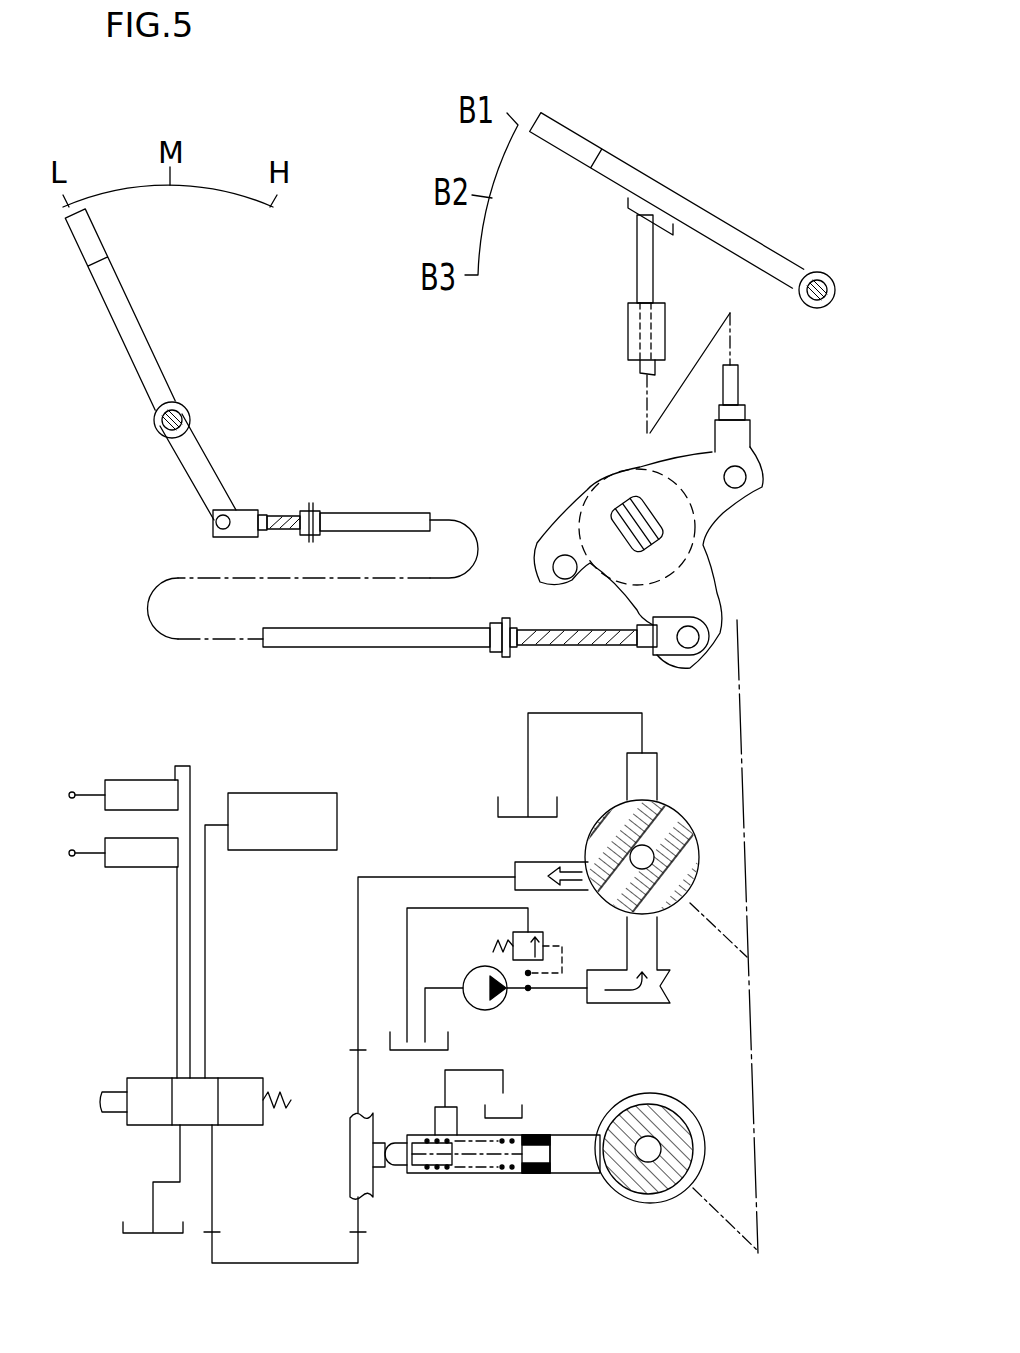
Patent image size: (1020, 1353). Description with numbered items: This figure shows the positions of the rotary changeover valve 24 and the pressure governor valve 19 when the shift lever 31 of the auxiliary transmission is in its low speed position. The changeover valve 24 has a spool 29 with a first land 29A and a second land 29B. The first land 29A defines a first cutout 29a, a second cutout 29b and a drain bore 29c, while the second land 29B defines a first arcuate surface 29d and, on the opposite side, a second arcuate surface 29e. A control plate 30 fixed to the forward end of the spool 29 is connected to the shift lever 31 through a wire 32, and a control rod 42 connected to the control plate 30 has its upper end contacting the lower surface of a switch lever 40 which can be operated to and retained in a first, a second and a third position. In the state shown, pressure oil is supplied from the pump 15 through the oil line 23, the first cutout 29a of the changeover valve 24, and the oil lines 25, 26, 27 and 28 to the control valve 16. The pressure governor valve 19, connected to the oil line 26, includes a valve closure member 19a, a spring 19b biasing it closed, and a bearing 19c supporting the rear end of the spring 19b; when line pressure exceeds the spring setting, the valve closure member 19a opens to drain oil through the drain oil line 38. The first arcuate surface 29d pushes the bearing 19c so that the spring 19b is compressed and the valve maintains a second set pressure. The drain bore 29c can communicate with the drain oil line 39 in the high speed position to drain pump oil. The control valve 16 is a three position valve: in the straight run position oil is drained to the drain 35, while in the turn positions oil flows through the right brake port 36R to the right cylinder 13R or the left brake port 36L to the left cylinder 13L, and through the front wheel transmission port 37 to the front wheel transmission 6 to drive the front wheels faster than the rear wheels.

The shift lever 31 is at (140, 333).
The wire 32 is at (287, 513).
The switch lever 40 is at (710, 225).
The control rod 42 is at (638, 262).
The control plate 30 is at (720, 520).
The spool 29 is at (613, 470).
The changeover valve 24 is at (588, 493).
The drain oil line 39 is at (533, 713).
The drain bore 29c is at (605, 828).
The first land 29A is at (692, 820).
The second cutout 29b is at (690, 850).
The first cutout 29a is at (618, 902).
The oil line 25 is at (522, 863).
The oil line 23 is at (650, 930).
The pump 15 is at (467, 973).
The drain oil line 38 is at (445, 1087).
The pressure governor valve 19 is at (496, 1140).
The valve closure member 19a is at (405, 1160).
The spring 19b is at (513, 1172).
The bearing 19c is at (575, 1143).
The second land 29B is at (709, 1147).
The first arcuate surface 29d is at (627, 1185).
The second arcuate surface 29e is at (677, 1118).
The oil line 26 is at (348, 1128).
The oil line 27 is at (317, 1262).
The oil line 28 is at (212, 1210).
The control valve 16 is at (240, 1082).
The drain 35 is at (180, 1157).
The right brake port 36R is at (193, 940).
The left brake port 36L is at (178, 985).
The front wheel transmission port 37 is at (208, 977).
The right cylinder 13R is at (137, 788).
The left cylinder 13L is at (128, 857).
The front wheel transmission 6 is at (282, 821).